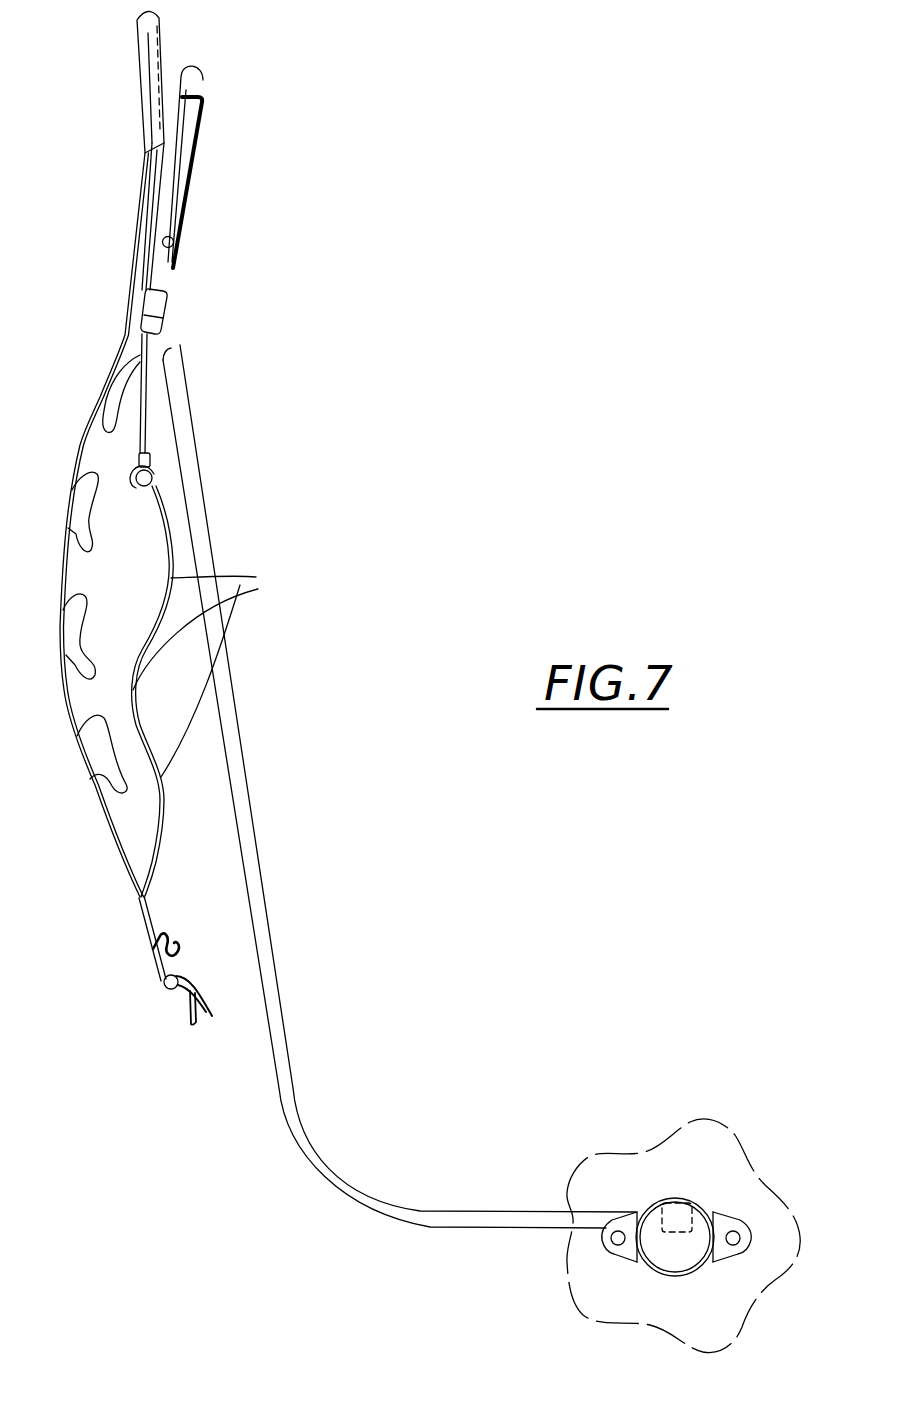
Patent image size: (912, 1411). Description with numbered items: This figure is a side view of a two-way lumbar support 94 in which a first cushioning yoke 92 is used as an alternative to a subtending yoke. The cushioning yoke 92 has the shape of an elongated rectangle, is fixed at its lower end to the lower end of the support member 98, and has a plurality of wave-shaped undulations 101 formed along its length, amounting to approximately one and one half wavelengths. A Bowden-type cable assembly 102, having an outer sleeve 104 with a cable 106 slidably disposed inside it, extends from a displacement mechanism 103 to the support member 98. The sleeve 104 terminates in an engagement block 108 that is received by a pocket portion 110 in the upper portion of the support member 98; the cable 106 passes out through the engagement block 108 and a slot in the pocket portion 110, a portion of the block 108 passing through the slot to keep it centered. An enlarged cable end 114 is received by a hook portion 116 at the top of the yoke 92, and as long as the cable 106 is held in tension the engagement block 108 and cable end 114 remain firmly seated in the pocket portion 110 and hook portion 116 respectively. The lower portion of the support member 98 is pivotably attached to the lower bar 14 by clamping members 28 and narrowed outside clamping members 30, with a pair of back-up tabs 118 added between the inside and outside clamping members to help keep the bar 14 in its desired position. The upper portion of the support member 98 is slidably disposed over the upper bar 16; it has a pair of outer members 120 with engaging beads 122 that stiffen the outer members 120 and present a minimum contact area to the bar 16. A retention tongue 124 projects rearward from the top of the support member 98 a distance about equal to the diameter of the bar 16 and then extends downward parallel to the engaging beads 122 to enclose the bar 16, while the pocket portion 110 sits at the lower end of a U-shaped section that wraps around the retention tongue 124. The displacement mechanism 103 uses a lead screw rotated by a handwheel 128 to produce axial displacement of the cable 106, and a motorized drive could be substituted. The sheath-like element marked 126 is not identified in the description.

The two-way lumbar support 94 is at (512, 287).
The engaging beads 122 is at (178, 174).
The outer members 120 is at (204, 99).
The retention tongue 124 is at (189, 139).
The upper bar 16 is at (175, 242).
The cable 126 is at (141, 293).
The engagement block 108 is at (170, 302).
The pocket portion 110 is at (152, 338).
The cable 106 is at (149, 421).
The enlarged cable end 114 is at (140, 491).
The hook portion 116 is at (155, 476).
The first cushioning yoke 92 is at (160, 490).
The support member 98 is at (84, 441).
The undulations 101 is at (224, 674).
The outer sleeve 104 is at (258, 827).
The Bowden-type cable assembly 102 is at (293, 1054).
The lower bar 14 is at (164, 982).
The back-up tabs 118 is at (162, 988).
The clamping members 28 is at (203, 1008).
The outside clamping members 30 is at (187, 1017).
The displacement mechanism 103 is at (721, 1206).
The handwheel 128 is at (640, 1158).